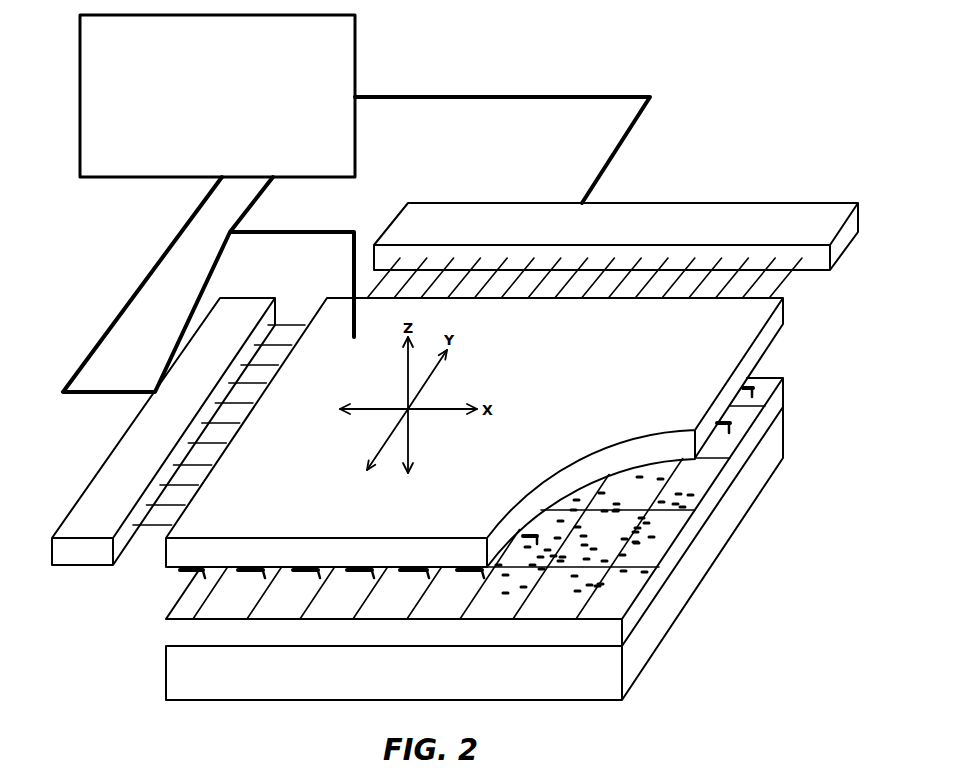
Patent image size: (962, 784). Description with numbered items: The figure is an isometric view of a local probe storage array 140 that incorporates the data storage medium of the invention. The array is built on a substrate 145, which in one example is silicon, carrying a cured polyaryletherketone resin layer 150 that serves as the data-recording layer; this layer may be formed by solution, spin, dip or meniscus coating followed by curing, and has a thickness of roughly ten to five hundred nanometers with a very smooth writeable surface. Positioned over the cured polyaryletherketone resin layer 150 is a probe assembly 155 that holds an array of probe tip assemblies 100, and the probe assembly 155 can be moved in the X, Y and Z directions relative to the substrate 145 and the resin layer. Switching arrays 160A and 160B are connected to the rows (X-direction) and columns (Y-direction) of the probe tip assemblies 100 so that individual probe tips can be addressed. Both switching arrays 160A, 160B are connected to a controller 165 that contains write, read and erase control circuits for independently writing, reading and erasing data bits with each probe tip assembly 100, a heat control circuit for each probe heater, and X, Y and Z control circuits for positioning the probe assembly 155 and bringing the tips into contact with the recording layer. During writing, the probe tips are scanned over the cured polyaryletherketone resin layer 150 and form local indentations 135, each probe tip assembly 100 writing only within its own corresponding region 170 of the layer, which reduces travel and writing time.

The probe tip assembly 100 is at (530, 540).
The local indentation 135 is at (604, 533).
The local probe storage array 140 is at (737, 130).
The substrate 145 is at (482, 688).
The cured polyaryletherketone resin layer 150 is at (683, 543).
The probe assembly 155 is at (638, 381).
The switching array 160A is at (182, 438).
The switching array 160B is at (655, 236).
The controller 165 is at (330, 170).
The region 170 is at (623, 518).